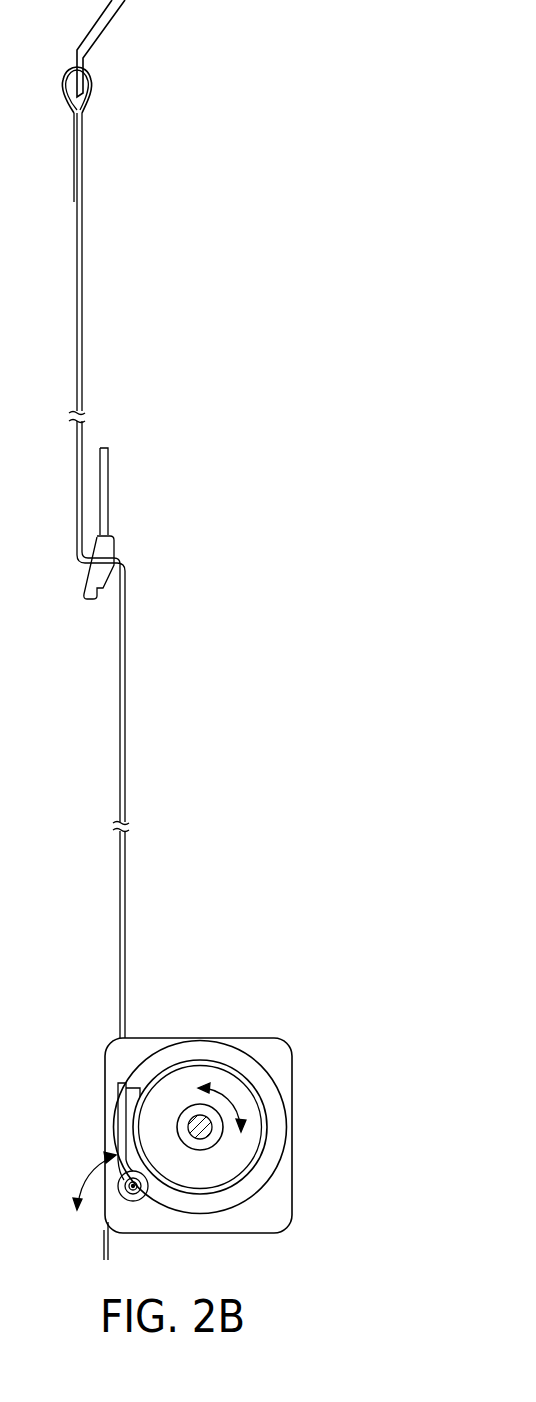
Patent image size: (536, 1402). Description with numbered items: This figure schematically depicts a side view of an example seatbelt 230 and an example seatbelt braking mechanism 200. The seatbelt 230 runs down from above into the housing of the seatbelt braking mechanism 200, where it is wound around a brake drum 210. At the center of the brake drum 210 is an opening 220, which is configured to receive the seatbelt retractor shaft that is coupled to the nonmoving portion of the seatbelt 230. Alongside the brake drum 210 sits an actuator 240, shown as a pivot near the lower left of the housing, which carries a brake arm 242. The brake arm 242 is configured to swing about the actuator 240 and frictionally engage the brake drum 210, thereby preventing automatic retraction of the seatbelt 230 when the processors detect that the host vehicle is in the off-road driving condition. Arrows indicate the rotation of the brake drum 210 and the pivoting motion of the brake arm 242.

The seatbelt braking mechanism 200 is at (249, 1038).
The brake drum 210 is at (268, 1127).
The opening 220 is at (212, 1133).
The seatbelt 230 is at (125, 878).
The actuator 240 is at (134, 1201).
The brake arm 242 is at (118, 1126).